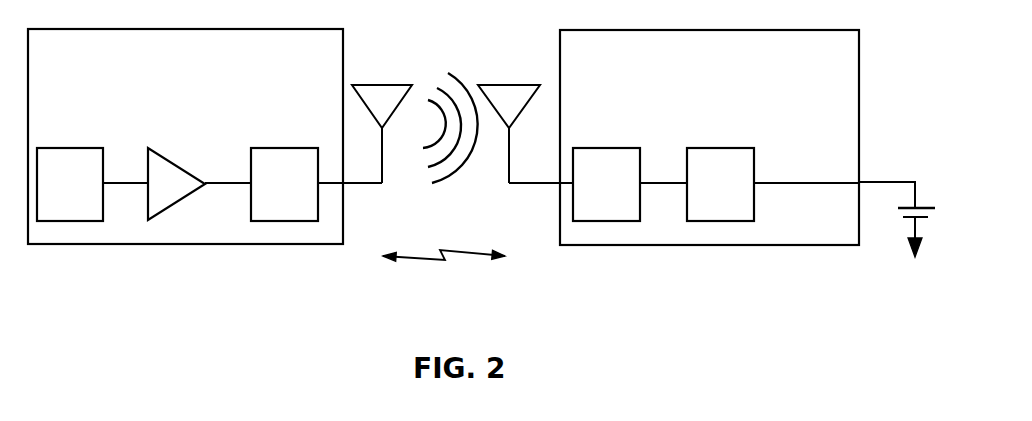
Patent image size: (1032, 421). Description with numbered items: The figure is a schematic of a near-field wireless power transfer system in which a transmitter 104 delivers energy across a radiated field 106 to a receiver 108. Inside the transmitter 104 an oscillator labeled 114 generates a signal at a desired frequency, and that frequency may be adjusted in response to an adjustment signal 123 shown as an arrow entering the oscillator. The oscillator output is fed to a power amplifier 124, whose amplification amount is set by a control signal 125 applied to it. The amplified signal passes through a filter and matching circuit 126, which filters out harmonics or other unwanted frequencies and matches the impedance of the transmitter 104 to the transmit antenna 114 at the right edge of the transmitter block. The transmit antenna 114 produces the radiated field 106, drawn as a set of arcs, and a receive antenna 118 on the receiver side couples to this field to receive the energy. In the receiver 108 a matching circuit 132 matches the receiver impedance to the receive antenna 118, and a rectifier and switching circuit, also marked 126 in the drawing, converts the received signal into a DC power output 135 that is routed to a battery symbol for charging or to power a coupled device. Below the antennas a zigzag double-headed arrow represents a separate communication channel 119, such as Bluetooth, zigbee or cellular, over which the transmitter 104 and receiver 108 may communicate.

The transmitter 104 is at (185, 136).
The transmit antenna 114 is at (362, 85).
The adjustment signal 123 is at (70, 130).
The control signal 125 is at (175, 143).
The power amplifier 124 is at (199, 188).
The filter and matching circuit 126 is at (555, 160).
The radiated field 106 is at (453, 188).
The receive antenna 118 is at (525, 85).
The communication channel 119 is at (450, 282).
The receiver 108 is at (709, 137).
The matching circuit 132 is at (606, 168).
The DC power output 135 is at (720, 130).